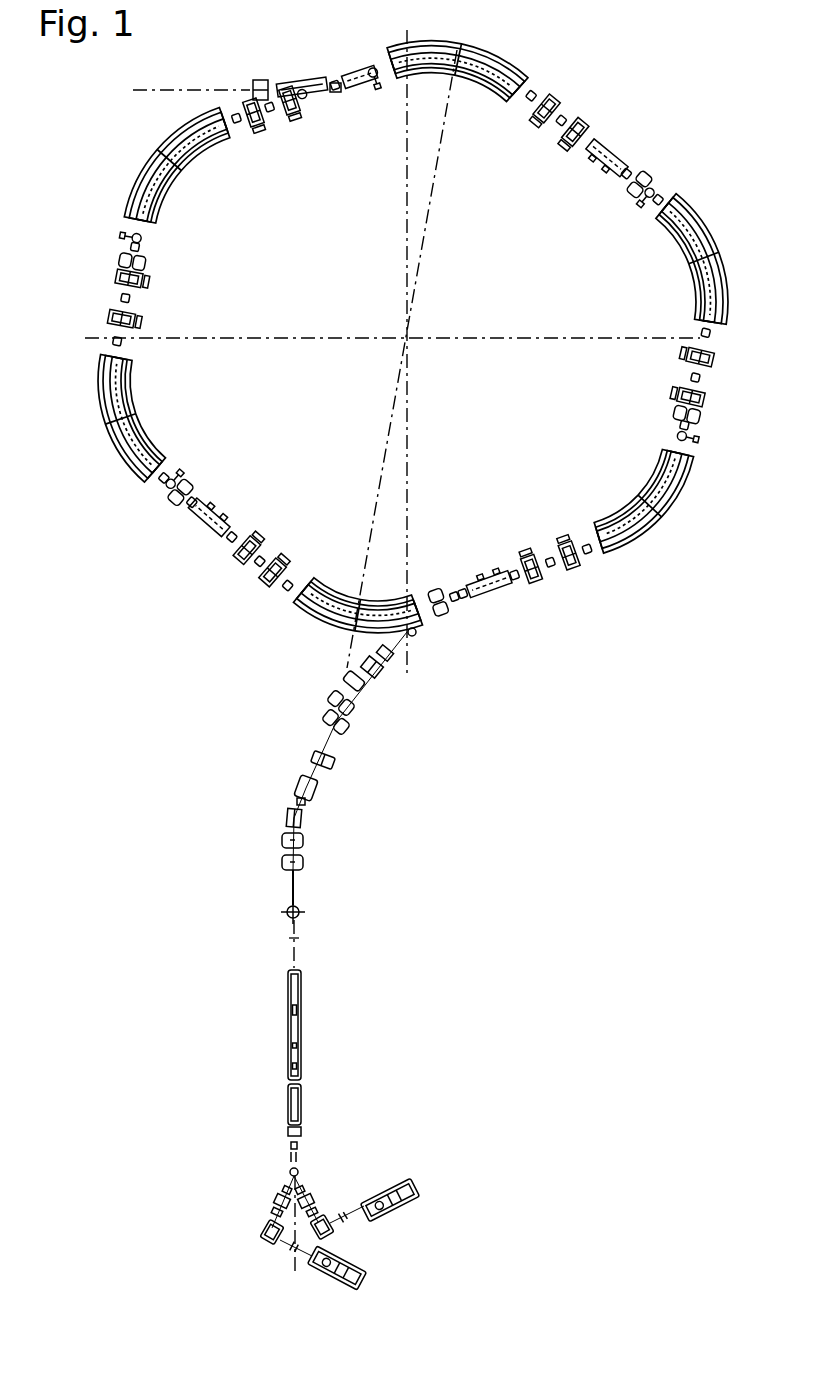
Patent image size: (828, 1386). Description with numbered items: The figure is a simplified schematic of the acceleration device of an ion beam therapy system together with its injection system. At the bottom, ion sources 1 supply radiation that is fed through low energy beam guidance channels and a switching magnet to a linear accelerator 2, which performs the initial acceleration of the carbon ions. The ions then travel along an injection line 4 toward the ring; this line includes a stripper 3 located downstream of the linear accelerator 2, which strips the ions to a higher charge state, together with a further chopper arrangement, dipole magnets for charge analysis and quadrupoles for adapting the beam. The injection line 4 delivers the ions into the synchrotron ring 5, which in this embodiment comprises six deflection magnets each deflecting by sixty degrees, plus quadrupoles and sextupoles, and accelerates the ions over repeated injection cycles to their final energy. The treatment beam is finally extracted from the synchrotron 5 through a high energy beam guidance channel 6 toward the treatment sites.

The ion sources 1 is at (353, 1263).
The linear accelerator 2 is at (307, 1040).
The stripper 3 is at (312, 902).
The injection line 4 is at (352, 733).
The synchrotron ring 5 is at (561, 578).
The high energy beam guidance channel 6 is at (133, 90).